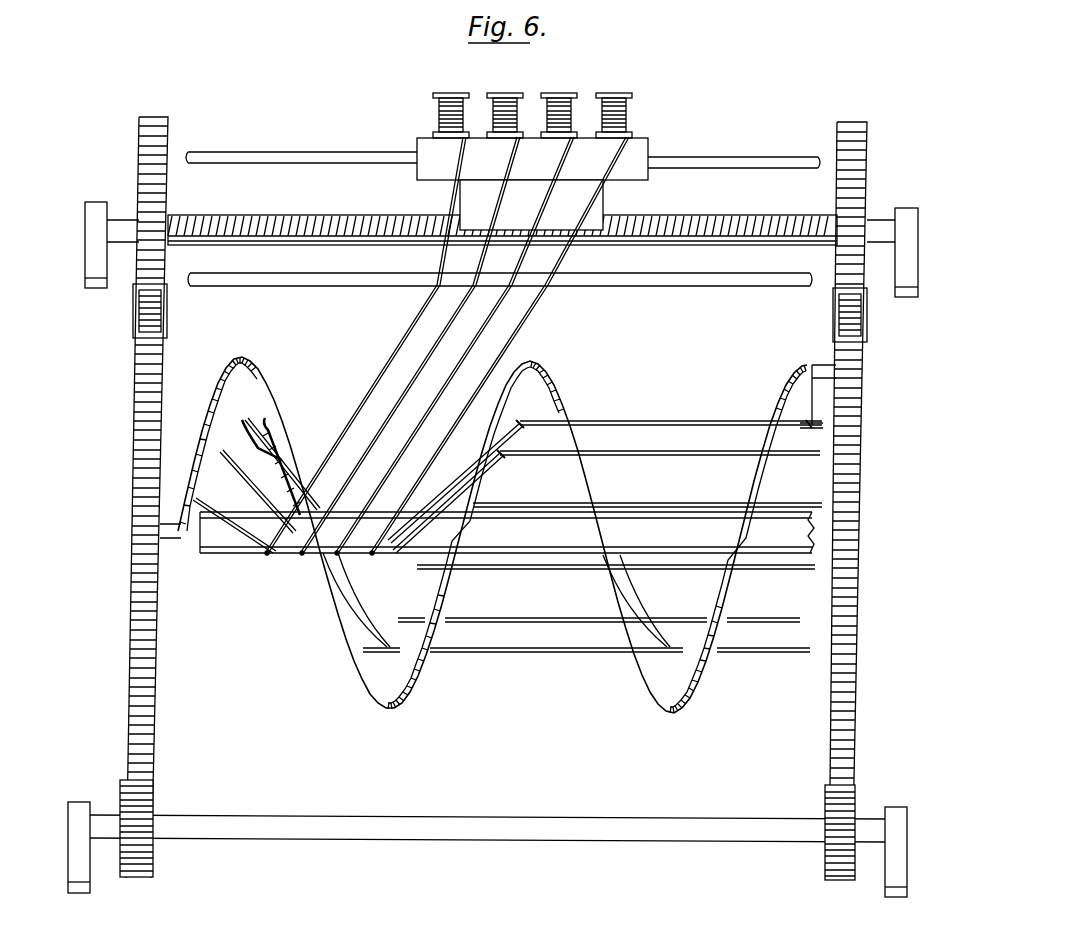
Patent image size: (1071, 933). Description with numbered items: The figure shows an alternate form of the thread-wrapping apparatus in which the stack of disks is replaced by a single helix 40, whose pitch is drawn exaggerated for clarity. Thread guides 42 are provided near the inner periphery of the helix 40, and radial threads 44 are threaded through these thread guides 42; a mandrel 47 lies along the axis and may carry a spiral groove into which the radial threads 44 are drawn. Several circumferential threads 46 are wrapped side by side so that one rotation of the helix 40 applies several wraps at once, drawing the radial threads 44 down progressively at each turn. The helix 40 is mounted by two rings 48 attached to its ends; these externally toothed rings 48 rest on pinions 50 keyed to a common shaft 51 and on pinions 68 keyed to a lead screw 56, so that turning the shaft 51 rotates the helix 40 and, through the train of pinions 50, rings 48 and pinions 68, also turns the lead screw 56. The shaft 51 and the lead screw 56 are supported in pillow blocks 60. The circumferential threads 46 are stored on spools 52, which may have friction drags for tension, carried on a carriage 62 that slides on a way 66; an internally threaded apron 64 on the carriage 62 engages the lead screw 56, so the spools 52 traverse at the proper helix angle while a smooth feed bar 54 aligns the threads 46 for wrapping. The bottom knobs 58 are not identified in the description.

The helix 40 is at (422, 680).
The thread guides 42 is at (272, 418).
The radial threads 44 is at (262, 488).
The circumferential threads 46 is at (432, 325).
The mandrel 47 is at (234, 555).
The rings 48 is at (498, 498).
The pinions 50 is at (154, 796).
The shaft 51 is at (410, 840).
The spools 52 is at (503, 93).
The feed bar 54 is at (402, 276).
The lead screw 56 is at (378, 215).
The bottom knobs 58 is at (78, 857).
The pillow blocks 60 is at (90, 252).
The carriage 62 is at (640, 154).
The apron 64 is at (603, 206).
The way 66 is at (737, 157).
The pinions 68 is at (139, 177).